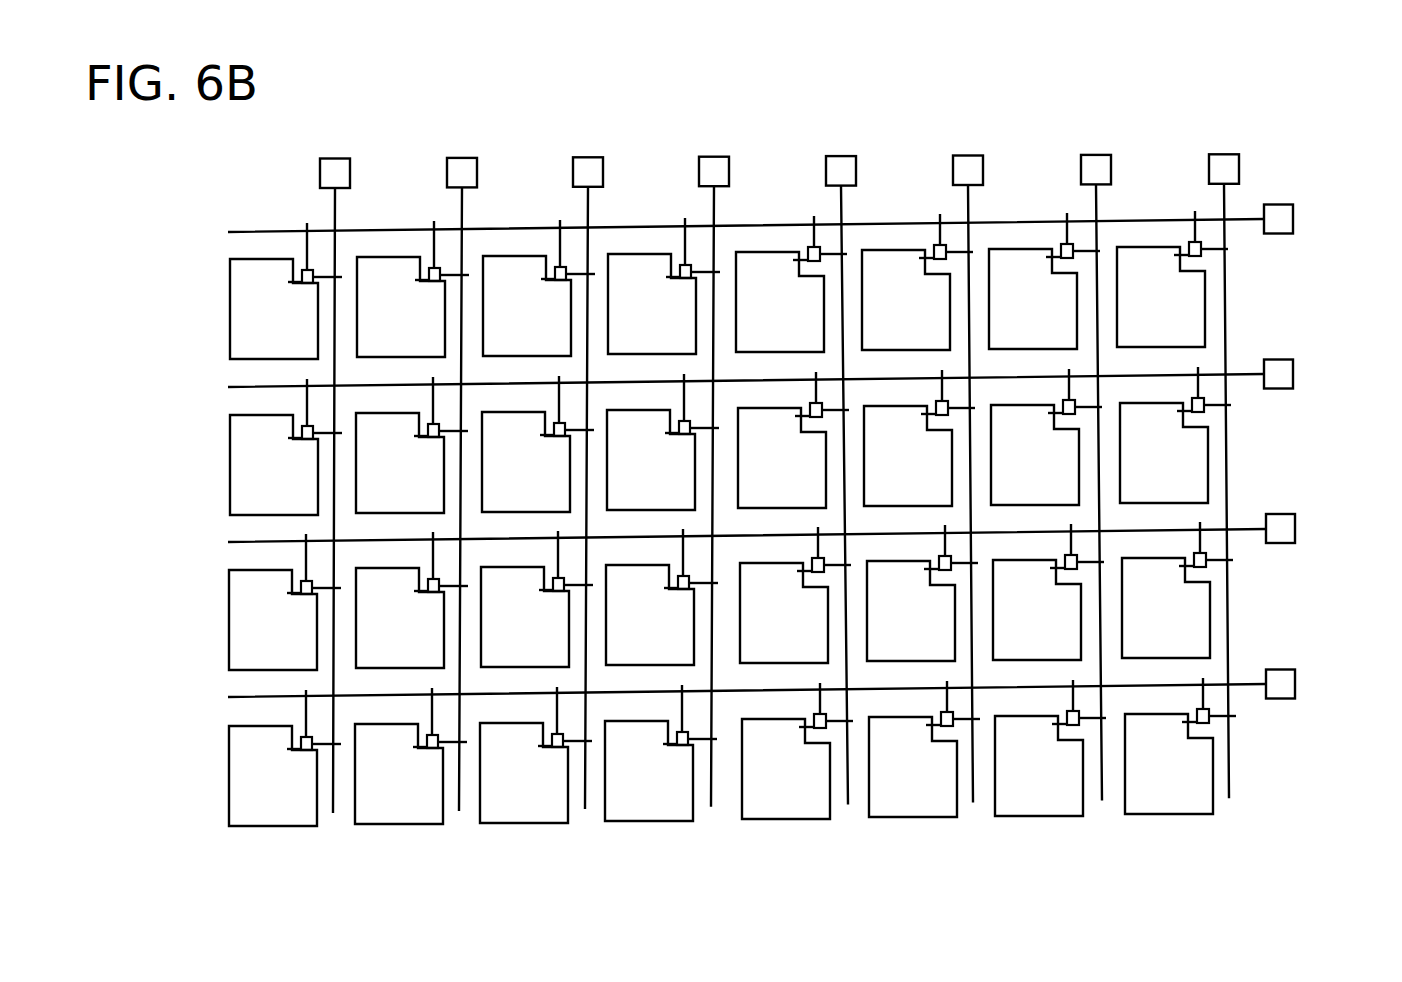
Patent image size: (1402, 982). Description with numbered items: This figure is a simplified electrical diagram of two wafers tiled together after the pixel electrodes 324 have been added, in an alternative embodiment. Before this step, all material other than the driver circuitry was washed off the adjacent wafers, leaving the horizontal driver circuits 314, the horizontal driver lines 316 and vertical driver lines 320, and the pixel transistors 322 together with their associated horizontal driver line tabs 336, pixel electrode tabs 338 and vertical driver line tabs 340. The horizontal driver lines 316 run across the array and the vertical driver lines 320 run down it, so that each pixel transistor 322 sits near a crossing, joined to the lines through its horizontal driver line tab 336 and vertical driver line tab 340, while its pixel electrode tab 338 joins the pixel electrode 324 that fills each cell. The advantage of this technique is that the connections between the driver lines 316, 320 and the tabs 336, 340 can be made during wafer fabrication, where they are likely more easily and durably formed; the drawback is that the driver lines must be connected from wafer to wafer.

The horizontal driver circuits 314 is at (830, 170).
The horizontal driver lines 316 is at (262, 388).
The vertical driver lines 320 is at (712, 786).
The pixel transistors 322 is at (295, 745).
The pixel electrodes 324 is at (800, 808).
The horizontal driver line tabs 336 is at (1205, 695).
The pixel electrode tabs 338 is at (1185, 722).
The vertical driver line tabs 340 is at (1220, 717).